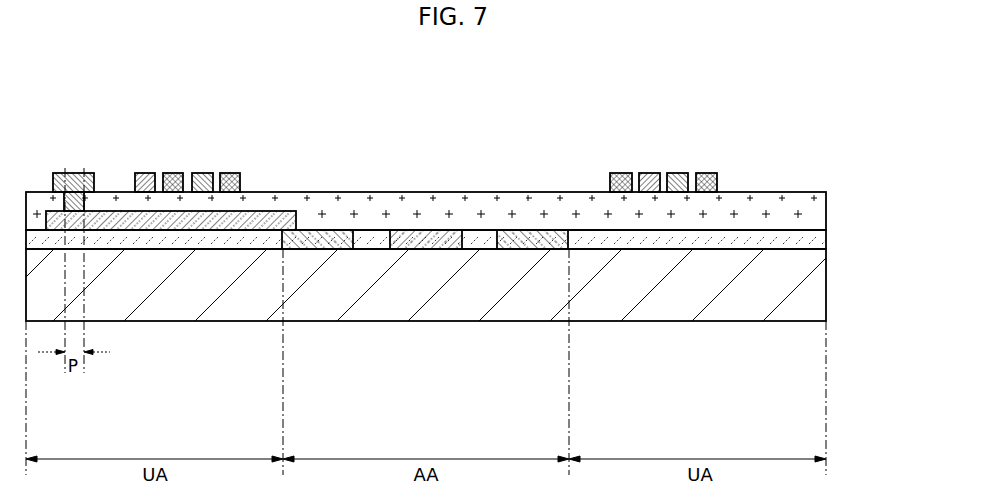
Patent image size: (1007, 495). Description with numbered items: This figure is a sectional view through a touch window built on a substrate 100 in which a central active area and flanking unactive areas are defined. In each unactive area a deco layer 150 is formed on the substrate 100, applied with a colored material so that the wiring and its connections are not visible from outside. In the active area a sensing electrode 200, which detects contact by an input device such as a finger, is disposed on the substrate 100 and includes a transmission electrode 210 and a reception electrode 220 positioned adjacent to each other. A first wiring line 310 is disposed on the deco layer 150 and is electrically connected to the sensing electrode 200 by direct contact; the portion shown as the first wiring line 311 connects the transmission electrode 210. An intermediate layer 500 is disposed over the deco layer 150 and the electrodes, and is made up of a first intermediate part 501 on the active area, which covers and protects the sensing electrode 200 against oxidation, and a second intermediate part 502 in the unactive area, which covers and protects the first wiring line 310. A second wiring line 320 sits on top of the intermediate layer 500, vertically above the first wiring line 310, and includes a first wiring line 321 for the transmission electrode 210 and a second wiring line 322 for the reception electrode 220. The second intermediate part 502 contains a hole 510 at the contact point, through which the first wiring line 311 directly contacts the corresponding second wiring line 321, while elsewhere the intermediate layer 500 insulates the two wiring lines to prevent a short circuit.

The substrate 100 is at (826, 287).
The deco layer 150 is at (826, 243).
The sensing electrode 200 is at (479, 179).
The transmission electrode 210 is at (532, 199).
The reception electrode 220 is at (432, 230).
The first wiring line 310 is at (171, 294).
The first wiring line 311 is at (219, 222).
The second wiring line 320 is at (390, 138).
The first wiring line 321 is at (87, 174).
The second wiring line 322 is at (426, 146).
The intermediate layer 500 is at (426, 147).
The first intermediate part 501 is at (372, 212).
The second intermediate part 502 is at (250, 192).
The hole 510 is at (73, 173).